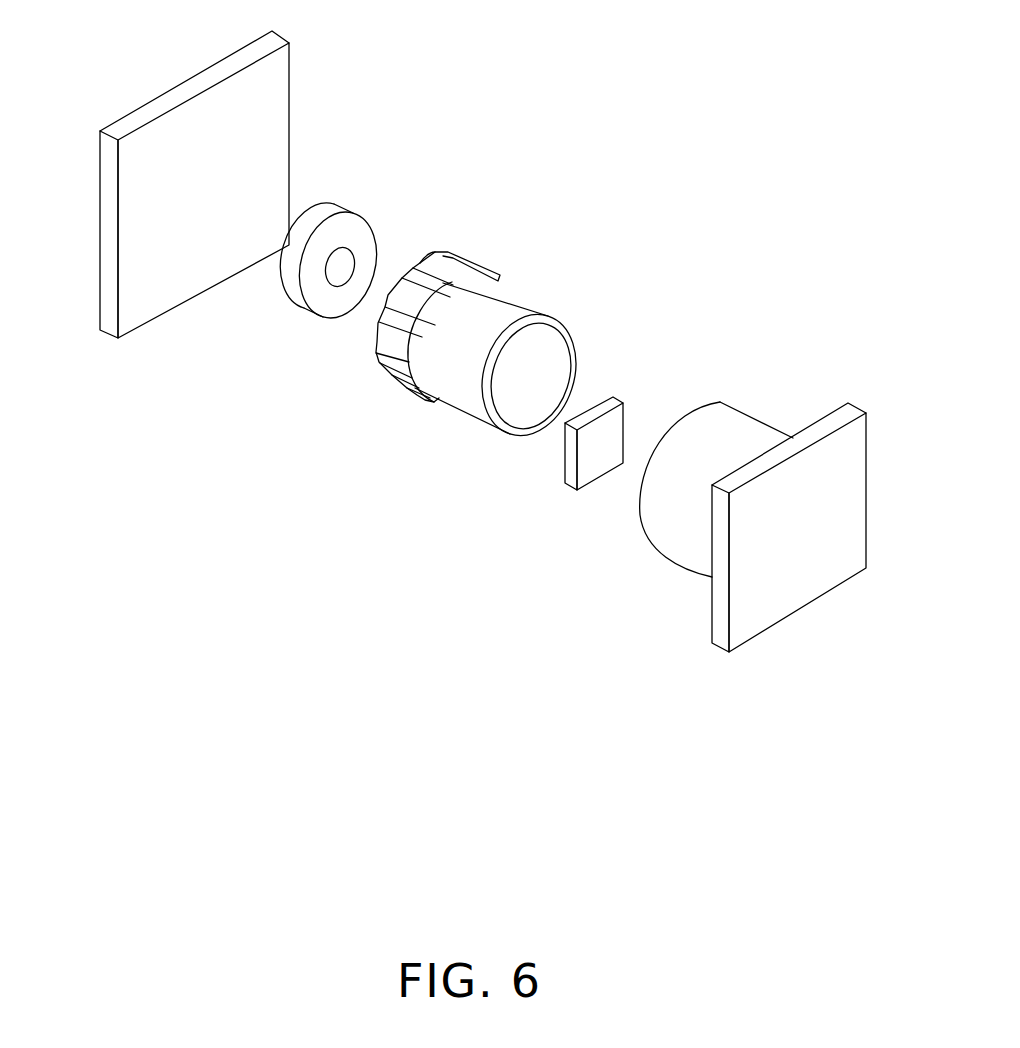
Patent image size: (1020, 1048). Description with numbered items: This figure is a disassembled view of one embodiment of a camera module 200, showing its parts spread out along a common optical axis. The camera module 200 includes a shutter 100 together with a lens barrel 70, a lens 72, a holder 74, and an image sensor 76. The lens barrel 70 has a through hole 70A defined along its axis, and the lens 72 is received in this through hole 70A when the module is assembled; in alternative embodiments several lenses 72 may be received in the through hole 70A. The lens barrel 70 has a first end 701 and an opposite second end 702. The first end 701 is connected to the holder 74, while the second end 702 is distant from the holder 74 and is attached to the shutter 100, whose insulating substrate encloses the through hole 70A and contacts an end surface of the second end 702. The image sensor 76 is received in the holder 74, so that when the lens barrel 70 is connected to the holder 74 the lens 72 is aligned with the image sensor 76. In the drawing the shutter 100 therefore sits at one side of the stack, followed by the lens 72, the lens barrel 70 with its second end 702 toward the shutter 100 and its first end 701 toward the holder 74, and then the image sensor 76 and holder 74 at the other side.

The shutter 100 is at (192, 87).
The camera module 200 is at (652, 213).
The lens barrel 70 is at (432, 366).
The first end 701 is at (455, 392).
The second end 702 is at (393, 342).
The through hole 70A is at (515, 407).
The lens 72 is at (332, 215).
The holder 74 is at (815, 430).
The image sensor 76 is at (603, 407).